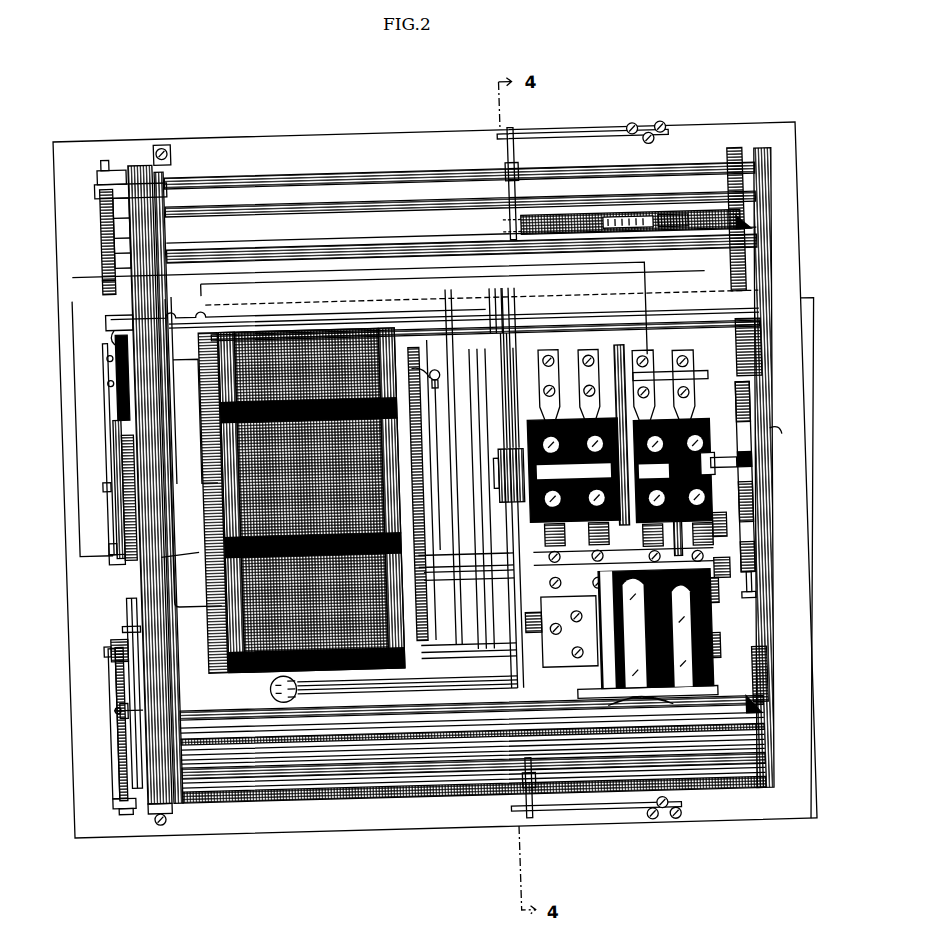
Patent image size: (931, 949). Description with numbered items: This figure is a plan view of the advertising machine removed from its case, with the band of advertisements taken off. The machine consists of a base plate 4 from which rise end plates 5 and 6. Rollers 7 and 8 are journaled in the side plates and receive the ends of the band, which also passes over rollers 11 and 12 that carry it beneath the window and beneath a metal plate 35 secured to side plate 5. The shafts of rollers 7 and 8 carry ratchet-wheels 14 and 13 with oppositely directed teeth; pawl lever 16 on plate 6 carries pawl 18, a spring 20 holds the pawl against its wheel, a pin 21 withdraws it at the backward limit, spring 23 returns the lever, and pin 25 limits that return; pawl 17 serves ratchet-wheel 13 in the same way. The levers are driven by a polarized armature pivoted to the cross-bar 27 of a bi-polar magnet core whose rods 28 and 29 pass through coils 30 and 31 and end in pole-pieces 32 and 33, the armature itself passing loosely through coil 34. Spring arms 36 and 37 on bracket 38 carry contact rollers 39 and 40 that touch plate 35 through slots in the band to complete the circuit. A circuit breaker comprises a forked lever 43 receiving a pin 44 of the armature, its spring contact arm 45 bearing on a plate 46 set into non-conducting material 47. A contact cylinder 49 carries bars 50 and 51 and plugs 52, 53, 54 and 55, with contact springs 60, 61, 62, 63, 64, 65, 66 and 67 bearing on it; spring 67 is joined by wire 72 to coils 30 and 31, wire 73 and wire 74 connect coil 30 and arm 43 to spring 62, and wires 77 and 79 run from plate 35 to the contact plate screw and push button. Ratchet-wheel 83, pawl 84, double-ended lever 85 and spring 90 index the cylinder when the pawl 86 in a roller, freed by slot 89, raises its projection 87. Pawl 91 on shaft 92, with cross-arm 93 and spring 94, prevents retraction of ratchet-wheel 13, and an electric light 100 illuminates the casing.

The base plate 4 is at (752, 142).
The end plate 5 is at (780, 432).
The end plate 6 is at (138, 808).
The roller 7 is at (314, 748).
The roller 8 is at (461, 227).
The roller 11 is at (690, 304).
The roller 12 is at (472, 726).
The ratchet-wheel 13 is at (98, 236).
The ratchet-wheel 14 is at (92, 757).
The pawl lever 16 is at (112, 612).
The pawl 17 is at (100, 323).
The pawl 18 is at (96, 656).
The spring 20 is at (98, 788).
The pin 21 is at (100, 720).
The spring 23 is at (112, 505).
The pin 25 is at (122, 632).
The cross-bar 27 is at (461, 469).
The rod 28 is at (469, 584).
The rod 29 is at (423, 386).
The spool or coil 30 is at (311, 500).
The spool or coil 31 is at (307, 375).
The pole-piece 32 is at (193, 451).
The pole-piece 33 is at (200, 503).
The spool or coil 34 is at (311, 488).
The metal plate 35 is at (806, 352).
The spring arm 36 is at (648, 633).
The spring arm 37 is at (675, 636).
The bracket 38 is at (561, 632).
The roller 39 is at (755, 386).
The roller 40 is at (742, 478).
The forked lever 43 is at (100, 435).
The pin 44 is at (92, 486).
The spring contact arm 45 is at (100, 378).
The plate 46 is at (96, 353).
The piece of non-conducting material 47 is at (107, 392).
The contact cylinder 49 is at (512, 462).
The bar 50 is at (573, 470).
The bar 51 is at (672, 471).
The plug 52 is at (559, 385).
The plug 53 is at (601, 385).
The plug 54 is at (654, 384).
The plug 55 is at (702, 438).
The contact spring 60 is at (560, 358).
The contact spring 61 is at (588, 388).
The contact spring 62 is at (640, 375).
The contact spring 63 is at (688, 390).
The contact spring 64 is at (564, 612).
The contact spring 65 is at (624, 558).
The contact spring 66 is at (690, 572).
The contact spring 67 is at (735, 592).
The wire 72 is at (448, 586).
The wire 73 is at (437, 279).
The wire 74 is at (67, 445).
The wire 77 is at (458, 328).
The wire 79 is at (190, 553).
The ratchet-wheel 83 is at (742, 530).
The pawl 84 is at (744, 576).
The double-ended lever 85 is at (753, 468).
The pawl 86 is at (690, 231).
The projection 87 is at (625, 232).
The slot 89 is at (748, 244).
The spring 90 is at (742, 338).
The pawl 91 is at (103, 172).
The shaft 92 is at (222, 181).
The cross-arm 93 is at (505, 162).
The spring 94 is at (575, 146).
The electric light 100 is at (432, 408).